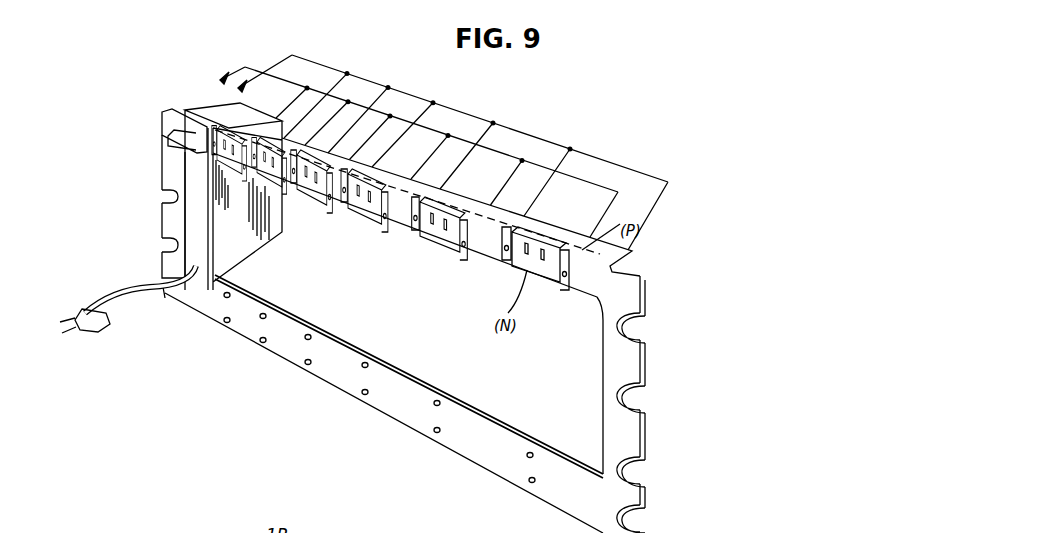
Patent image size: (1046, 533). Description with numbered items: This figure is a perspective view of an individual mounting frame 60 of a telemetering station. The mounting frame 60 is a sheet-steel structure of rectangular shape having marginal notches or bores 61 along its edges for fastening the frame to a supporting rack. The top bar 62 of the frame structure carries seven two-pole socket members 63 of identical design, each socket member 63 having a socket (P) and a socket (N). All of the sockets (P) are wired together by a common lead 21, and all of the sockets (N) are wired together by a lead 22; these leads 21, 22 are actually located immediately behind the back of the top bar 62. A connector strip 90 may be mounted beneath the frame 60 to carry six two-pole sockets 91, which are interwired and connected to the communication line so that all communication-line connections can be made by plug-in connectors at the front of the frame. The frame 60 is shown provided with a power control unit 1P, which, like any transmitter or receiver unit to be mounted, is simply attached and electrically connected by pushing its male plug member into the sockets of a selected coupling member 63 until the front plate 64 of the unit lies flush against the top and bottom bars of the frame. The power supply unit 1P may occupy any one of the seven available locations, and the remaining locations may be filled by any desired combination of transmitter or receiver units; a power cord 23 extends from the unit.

The power control unit 1P is at (198, 214).
The common lead 21 is at (540, 138).
The lead 22 is at (585, 183).
The power plug 23 is at (86, 325).
The mounting frame 60 is at (633, 302).
The marginal notches or bores 61 is at (630, 392).
The top bar 62 is at (600, 293).
The two-pole socket member 63 is at (417, 238).
The front plate 64 is at (190, 222).
The connector strip 90 is at (473, 452).
The two-pole sockets 91 is at (434, 429).